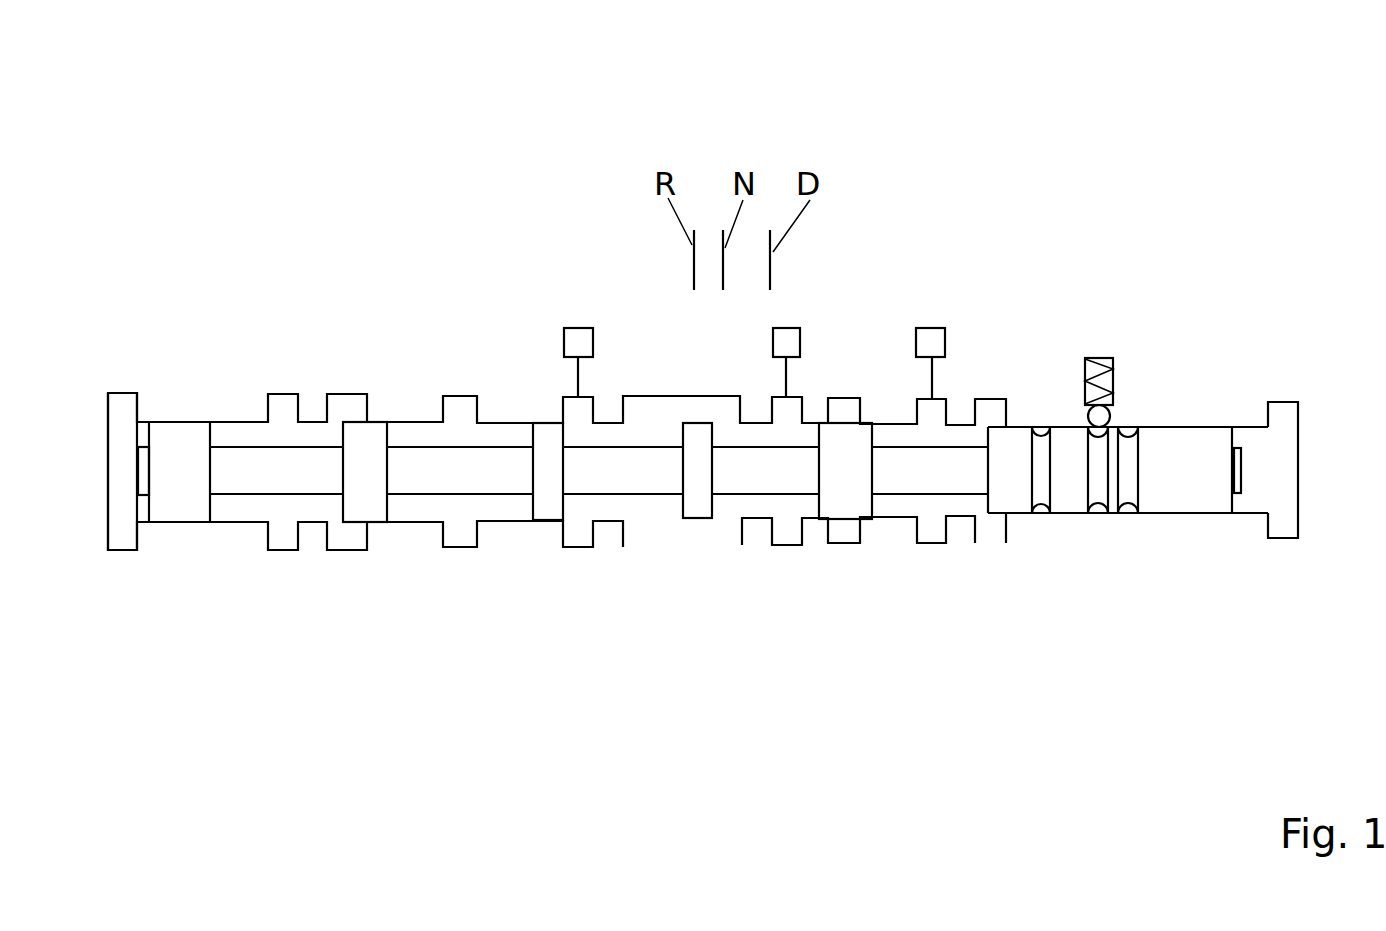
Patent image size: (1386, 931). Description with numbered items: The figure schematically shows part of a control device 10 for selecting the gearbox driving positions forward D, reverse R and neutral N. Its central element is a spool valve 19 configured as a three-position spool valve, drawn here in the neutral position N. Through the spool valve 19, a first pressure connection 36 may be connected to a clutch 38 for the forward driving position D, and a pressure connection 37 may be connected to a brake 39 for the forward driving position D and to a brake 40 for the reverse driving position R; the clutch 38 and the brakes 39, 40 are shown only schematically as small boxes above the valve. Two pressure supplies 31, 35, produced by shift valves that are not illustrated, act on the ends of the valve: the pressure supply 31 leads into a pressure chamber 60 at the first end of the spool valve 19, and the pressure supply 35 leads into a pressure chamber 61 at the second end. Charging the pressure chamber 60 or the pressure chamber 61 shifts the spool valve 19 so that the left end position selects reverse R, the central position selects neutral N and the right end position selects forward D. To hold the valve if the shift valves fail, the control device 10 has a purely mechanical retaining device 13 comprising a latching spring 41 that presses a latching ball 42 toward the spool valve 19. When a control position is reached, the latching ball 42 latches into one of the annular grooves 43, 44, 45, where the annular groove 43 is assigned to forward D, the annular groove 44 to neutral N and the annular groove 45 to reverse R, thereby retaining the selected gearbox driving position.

The control device 10 is at (1252, 97).
The retaining device 13 is at (1122, 355).
The spool valve 19 is at (1185, 467).
The pressure supply 31 is at (123, 550).
The pressure supply 35 is at (1285, 538).
The first pressure connection 36 is at (462, 548).
The pressure connection 37 is at (846, 543).
The clutch 38 is at (582, 338).
The brake 39 is at (788, 343).
The brake 40 is at (933, 340).
The latching spring 41 is at (1097, 358).
The latching ball 42 is at (1090, 408).
The annular groove 43 is at (1040, 513).
The annular groove 44 is at (1098, 513).
The annular groove 45 is at (1128, 513).
The pressure chamber 60 is at (123, 430).
The pressure chamber 61 is at (1282, 423).